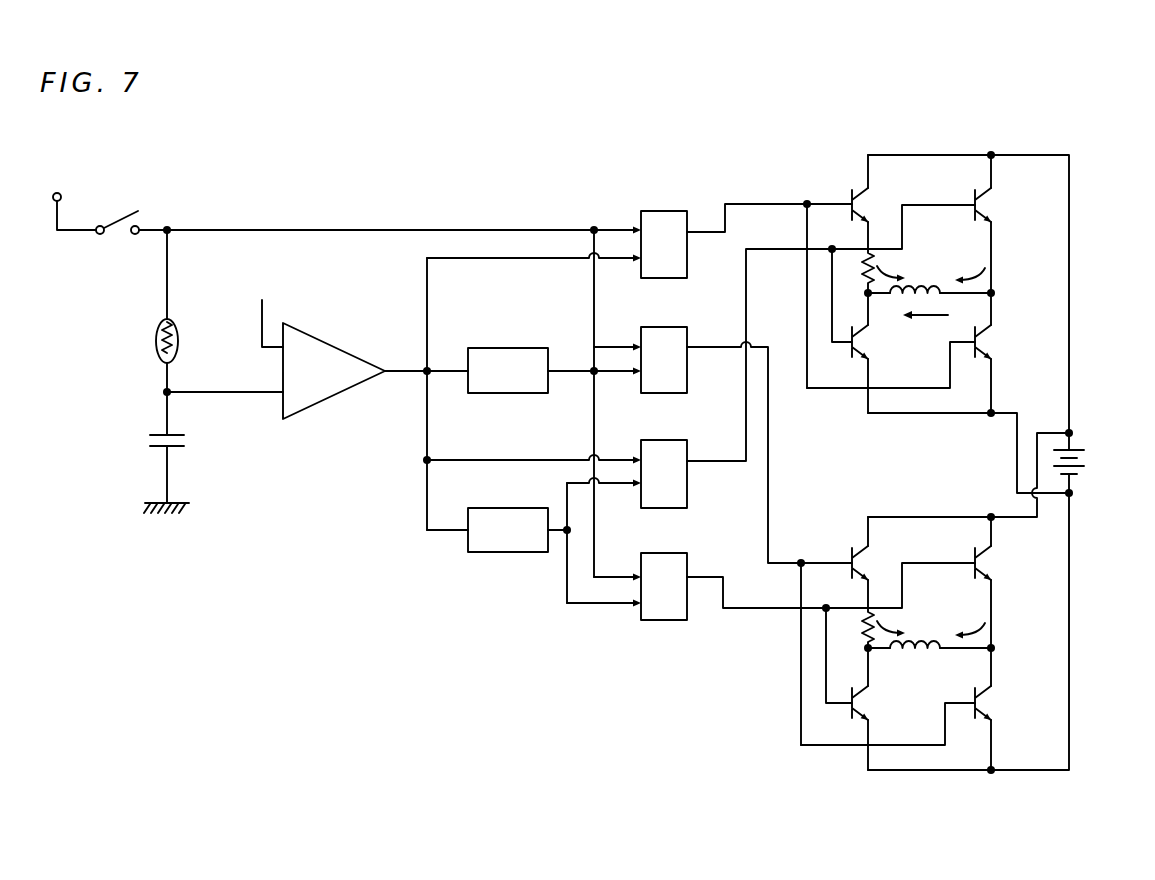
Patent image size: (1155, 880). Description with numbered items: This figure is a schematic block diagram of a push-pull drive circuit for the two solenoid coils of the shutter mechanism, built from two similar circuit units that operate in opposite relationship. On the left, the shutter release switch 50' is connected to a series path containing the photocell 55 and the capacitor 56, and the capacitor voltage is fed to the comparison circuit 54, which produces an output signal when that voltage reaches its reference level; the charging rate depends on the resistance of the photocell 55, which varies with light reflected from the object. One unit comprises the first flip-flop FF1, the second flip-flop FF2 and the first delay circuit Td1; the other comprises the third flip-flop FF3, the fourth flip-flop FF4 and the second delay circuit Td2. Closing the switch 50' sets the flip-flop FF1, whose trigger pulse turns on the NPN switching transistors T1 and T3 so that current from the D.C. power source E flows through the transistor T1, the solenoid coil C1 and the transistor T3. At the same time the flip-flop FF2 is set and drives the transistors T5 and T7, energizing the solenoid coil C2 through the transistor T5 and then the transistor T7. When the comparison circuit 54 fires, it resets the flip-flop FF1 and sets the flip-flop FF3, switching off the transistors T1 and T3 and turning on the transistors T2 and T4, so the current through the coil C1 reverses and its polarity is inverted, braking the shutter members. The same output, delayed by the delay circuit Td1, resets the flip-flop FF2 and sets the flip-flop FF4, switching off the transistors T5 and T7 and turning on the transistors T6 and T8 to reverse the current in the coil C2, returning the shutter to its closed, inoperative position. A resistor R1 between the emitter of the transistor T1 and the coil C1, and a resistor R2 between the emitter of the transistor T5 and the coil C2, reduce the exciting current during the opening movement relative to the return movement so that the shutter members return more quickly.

The shutter release switch 50' is at (102, 197).
The photocell 55 is at (156, 341).
The capacitor 56 is at (152, 439).
The comparison circuit 54 is at (322, 403).
The first delay circuit Td1 is at (492, 347).
The second delay circuit Td2 is at (480, 508).
The first flip-flop FF1 is at (665, 211).
The second flip-flop FF2 is at (678, 327).
The third flip-flop FF3 is at (677, 440).
The fourth flip-flop FF4 is at (677, 553).
The switching transistor T1 is at (875, 198).
The switching transistor T2 is at (990, 198).
The switching transistor T3 is at (993, 348).
The switching transistor T4 is at (870, 348).
The switching transistor T5 is at (875, 560).
The switching transistor T6 is at (992, 562).
The switching transistor T7 is at (986, 702).
The switching transistor T8 is at (862, 702).
The resistor R1 is at (852, 271).
The resistor R2 is at (851, 629).
The solenoid coil C1 is at (925, 290).
The solenoid coil C2 is at (925, 645).
The D.C. power source E is at (1085, 458).